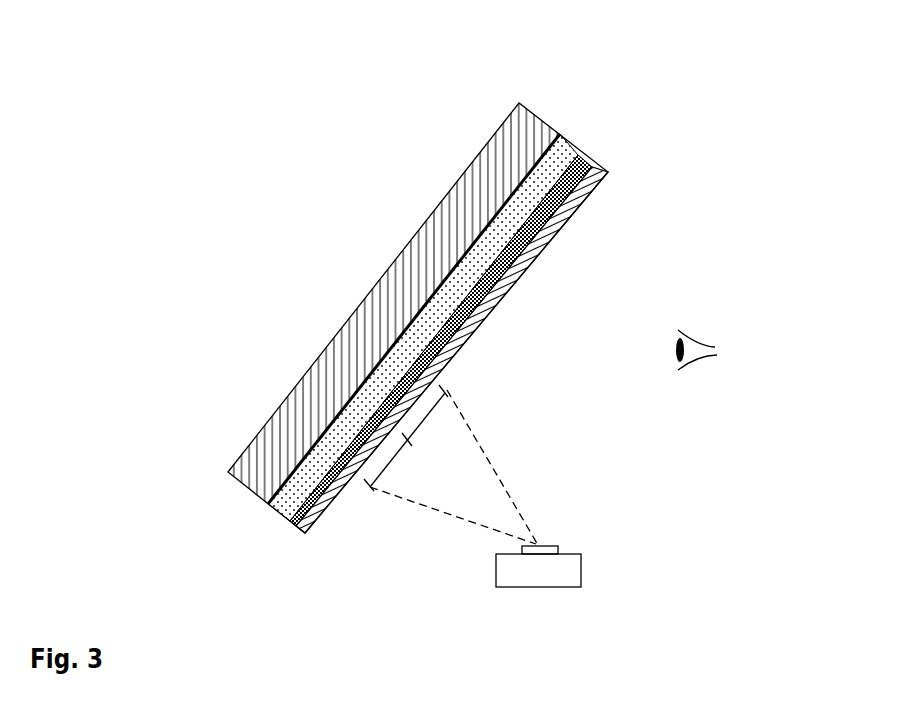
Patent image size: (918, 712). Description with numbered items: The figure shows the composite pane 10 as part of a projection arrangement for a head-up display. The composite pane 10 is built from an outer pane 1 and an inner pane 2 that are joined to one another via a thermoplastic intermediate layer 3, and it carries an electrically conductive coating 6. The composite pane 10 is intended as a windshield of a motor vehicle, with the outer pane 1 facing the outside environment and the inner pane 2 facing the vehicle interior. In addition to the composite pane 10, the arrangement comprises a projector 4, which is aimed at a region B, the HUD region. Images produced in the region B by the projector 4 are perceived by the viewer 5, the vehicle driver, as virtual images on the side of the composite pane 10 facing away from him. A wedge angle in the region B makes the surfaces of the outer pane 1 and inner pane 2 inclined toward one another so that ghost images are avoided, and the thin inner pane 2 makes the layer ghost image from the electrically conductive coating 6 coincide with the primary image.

The composite pane 10 is at (490, 87).
The outer pane 1 is at (383, 315).
The thermoplastic intermediate layer 3 is at (562, 160).
The electrically conductive coating 6 is at (593, 187).
The inner pane 2 is at (565, 215).
The region B is at (406, 438).
The projector 4 is at (560, 573).
The viewer 5 is at (717, 330).